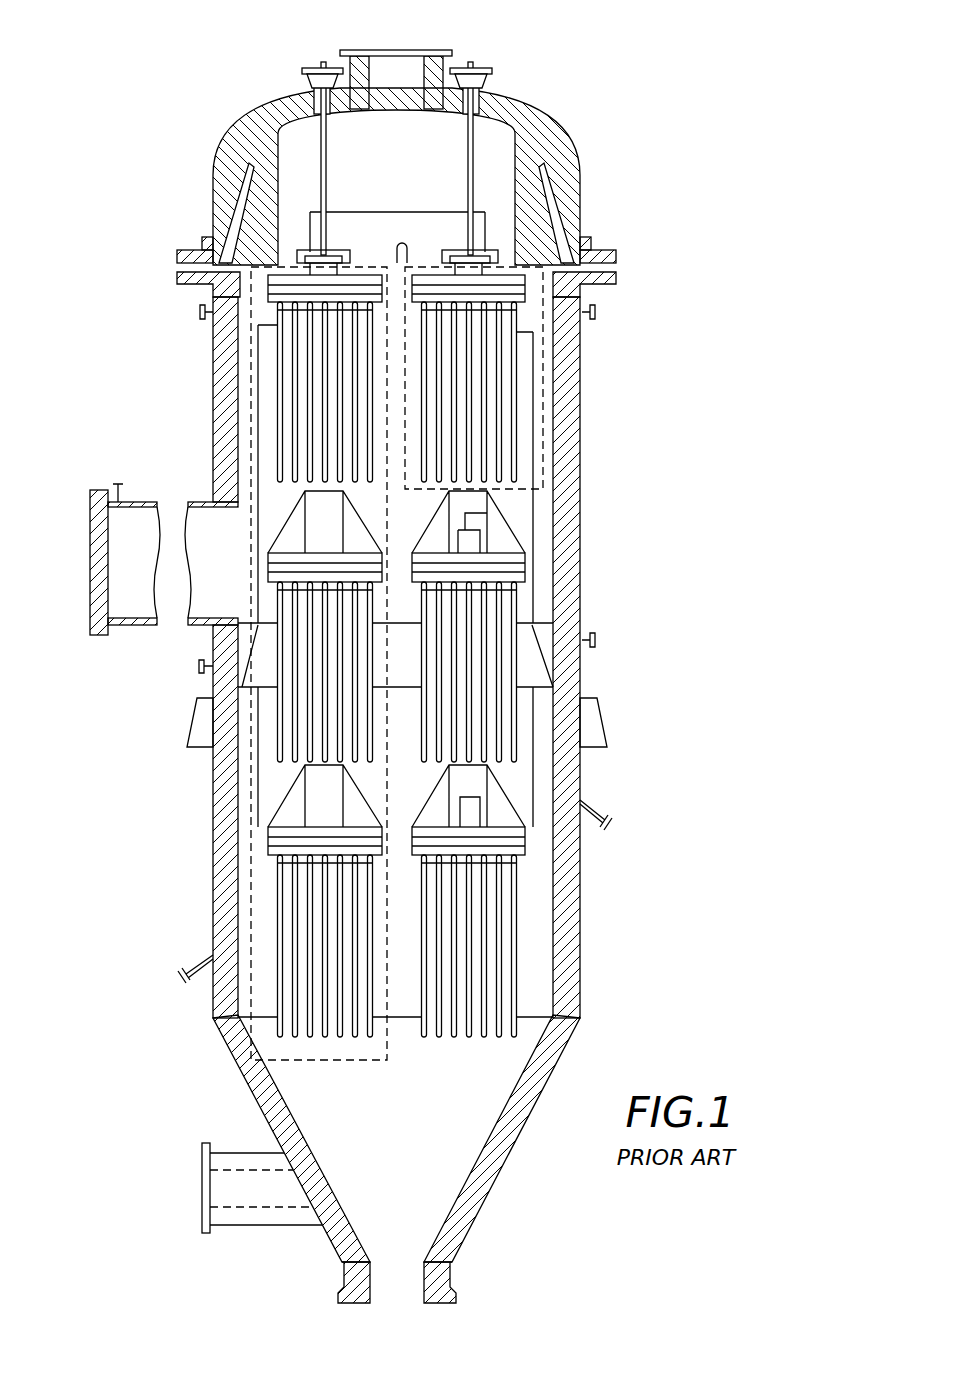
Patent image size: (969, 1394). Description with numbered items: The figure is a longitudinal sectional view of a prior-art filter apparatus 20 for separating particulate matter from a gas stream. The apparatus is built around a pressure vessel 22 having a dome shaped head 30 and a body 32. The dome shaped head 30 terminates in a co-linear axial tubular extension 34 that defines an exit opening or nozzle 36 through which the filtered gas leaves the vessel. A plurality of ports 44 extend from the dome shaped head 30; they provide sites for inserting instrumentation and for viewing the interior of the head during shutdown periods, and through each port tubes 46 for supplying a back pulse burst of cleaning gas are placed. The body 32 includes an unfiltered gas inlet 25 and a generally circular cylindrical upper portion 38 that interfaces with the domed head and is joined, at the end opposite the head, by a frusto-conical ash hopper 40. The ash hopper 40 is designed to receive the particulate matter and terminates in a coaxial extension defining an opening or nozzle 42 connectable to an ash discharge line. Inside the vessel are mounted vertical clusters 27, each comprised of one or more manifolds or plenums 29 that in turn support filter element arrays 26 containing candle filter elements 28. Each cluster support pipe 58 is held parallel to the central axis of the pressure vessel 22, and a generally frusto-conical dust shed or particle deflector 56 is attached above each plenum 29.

The filter apparatus 20 is at (430, 615).
The pressure vessel 22 is at (598, 616).
The unfiltered gas inlet 25 is at (90, 532).
The filter element arrays 26 is at (292, 357).
The vertical clusters 27 is at (338, 1080).
The candle filter elements 28 is at (283, 463).
The plenum 29 is at (270, 838).
The dome shaped head 30 is at (437, 137).
The body 32 is at (654, 938).
The axial tubular extension 34 is at (448, 60).
The exit nozzle 36 is at (435, 54).
The upper portion 38 is at (582, 563).
The ash hopper 40 is at (520, 1140).
The ash discharge nozzle 42 is at (405, 1295).
The ports 44 is at (306, 80).
The back pulse tubes 46 is at (323, 62).
The dust shed 56 is at (505, 822).
The cluster support pipe 58 is at (316, 790).